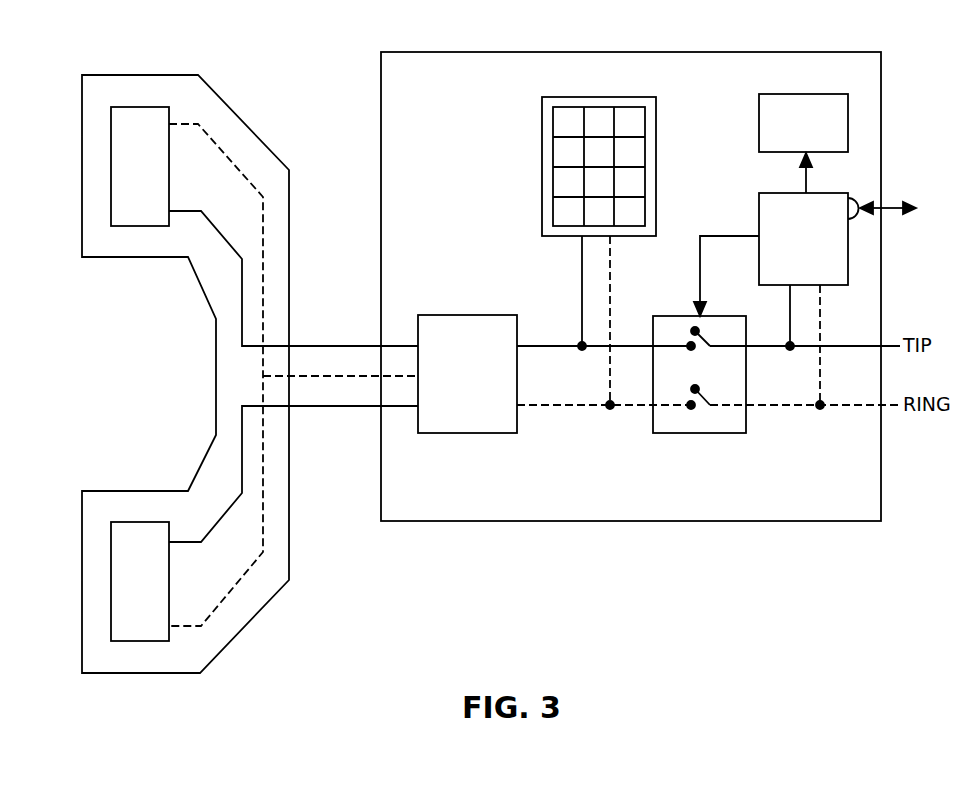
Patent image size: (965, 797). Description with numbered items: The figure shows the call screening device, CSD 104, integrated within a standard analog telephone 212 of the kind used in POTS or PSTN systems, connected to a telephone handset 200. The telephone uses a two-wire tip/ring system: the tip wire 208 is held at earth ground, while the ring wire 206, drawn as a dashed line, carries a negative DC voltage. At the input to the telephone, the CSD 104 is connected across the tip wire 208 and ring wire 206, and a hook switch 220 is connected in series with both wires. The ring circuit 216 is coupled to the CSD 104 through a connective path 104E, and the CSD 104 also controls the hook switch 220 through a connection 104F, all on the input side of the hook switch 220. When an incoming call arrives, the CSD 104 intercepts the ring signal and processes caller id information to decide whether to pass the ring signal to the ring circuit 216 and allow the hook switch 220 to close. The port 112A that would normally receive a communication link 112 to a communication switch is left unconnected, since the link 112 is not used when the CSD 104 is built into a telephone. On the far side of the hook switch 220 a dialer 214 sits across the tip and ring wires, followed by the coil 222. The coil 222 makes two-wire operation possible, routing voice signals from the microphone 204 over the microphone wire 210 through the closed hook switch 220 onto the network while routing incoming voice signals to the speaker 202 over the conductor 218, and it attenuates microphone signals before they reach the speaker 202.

The telephone handset 200 is at (250, 130).
The speaker 202 is at (121, 107).
The microphone 204 is at (122, 641).
The ring wire 206 is at (548, 406).
The tip wire 208 is at (307, 346).
The microphone wire 210 is at (358, 407).
The telephone base unit 212 is at (690, 52).
The dialer 214 is at (604, 97).
The ring circuit 216 is at (797, 94).
The conductor 218 is at (300, 377).
The hook switch 220 is at (699, 434).
The coil 222 is at (460, 315).
The CSD 104 is at (768, 193).
The connective path 104E is at (806, 172).
The hook switch control output 104F is at (699, 282).
The communication link 112 is at (883, 203).
The port 112A is at (851, 218).